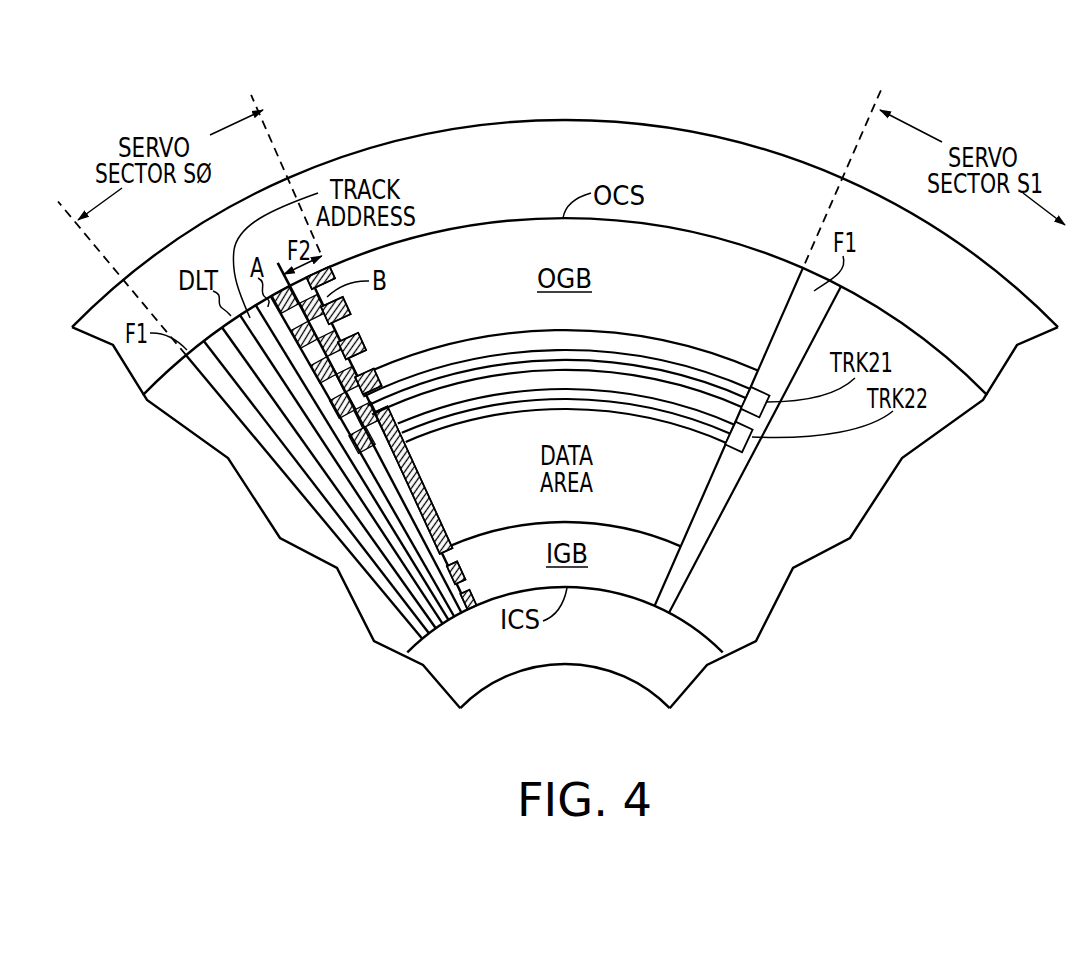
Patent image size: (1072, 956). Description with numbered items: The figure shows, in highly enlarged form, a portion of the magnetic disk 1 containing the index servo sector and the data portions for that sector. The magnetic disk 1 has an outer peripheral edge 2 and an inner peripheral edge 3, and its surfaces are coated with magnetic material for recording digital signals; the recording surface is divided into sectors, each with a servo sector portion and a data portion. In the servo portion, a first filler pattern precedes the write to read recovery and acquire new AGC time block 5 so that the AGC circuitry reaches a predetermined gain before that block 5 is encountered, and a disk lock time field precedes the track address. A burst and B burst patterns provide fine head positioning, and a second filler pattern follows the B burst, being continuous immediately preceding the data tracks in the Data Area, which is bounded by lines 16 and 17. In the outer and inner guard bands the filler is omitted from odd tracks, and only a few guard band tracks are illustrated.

The magnetic disk 1 is at (418, 90).
The outer peripheral edge 2 is at (690, 130).
The inner peripheral edge 3 is at (567, 666).
The write to read recovery and acquire new AGC time block 5 is at (214, 332).
The line bounding the Data Area 16 is at (579, 330).
The line bounding the Data Area 17 is at (578, 523).